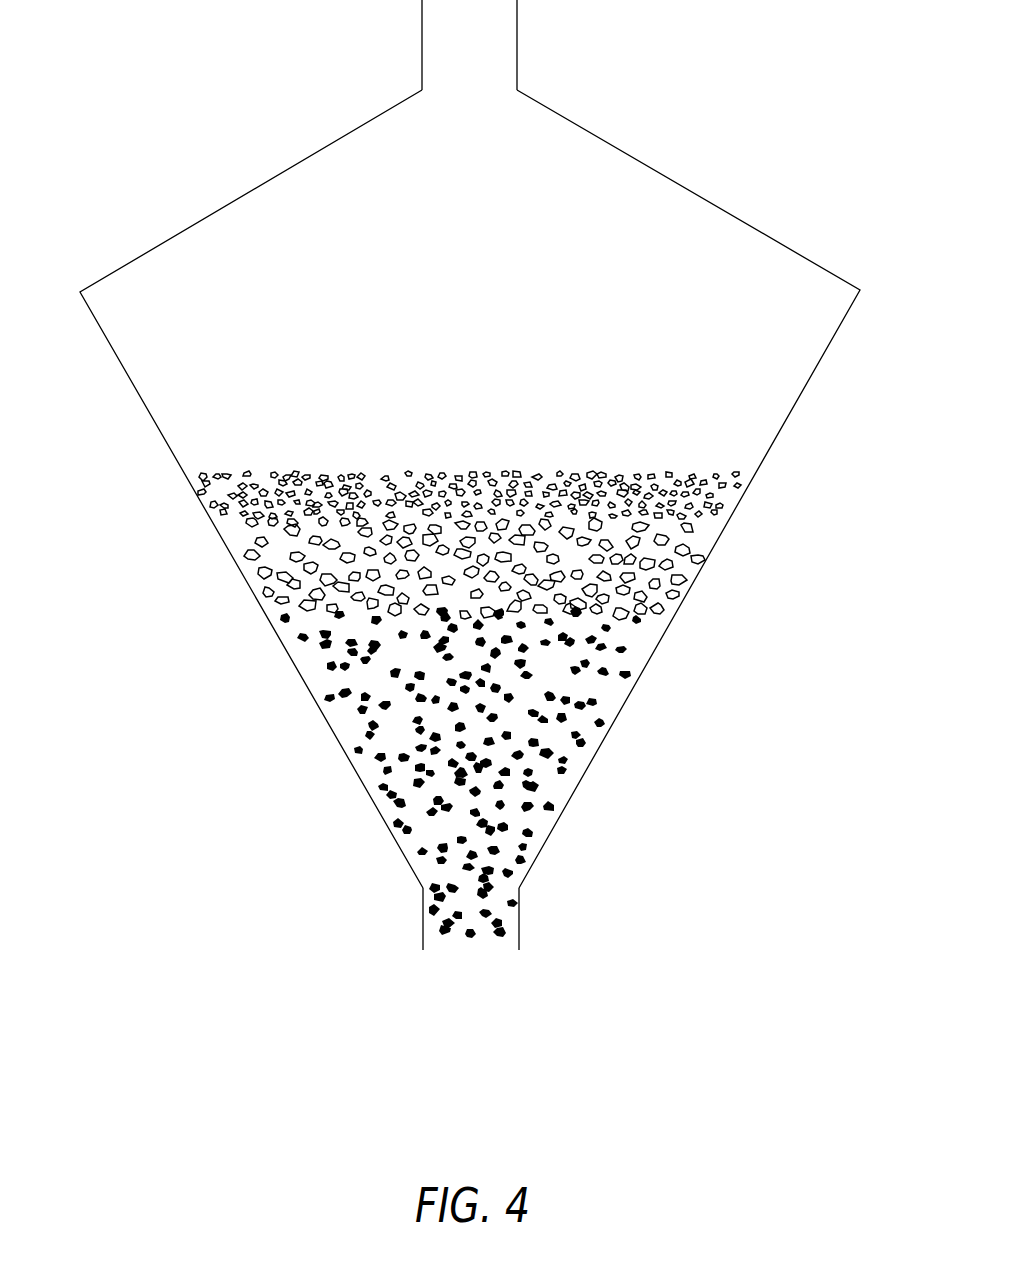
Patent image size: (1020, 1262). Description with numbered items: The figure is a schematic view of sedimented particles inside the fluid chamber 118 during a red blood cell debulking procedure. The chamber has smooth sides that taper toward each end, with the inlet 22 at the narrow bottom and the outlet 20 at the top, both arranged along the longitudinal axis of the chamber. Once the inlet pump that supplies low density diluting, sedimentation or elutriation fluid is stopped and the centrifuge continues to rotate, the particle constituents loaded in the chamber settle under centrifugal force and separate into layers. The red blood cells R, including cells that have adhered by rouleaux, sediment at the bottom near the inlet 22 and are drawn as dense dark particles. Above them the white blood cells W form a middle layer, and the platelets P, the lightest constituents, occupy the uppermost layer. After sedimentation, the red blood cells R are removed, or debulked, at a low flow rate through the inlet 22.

The outlet 20 is at (517, 72).
The fluid chamber 118 is at (682, 188).
The inlet 22 is at (520, 918).
The platelets P is at (723, 473).
The white blood cells W is at (682, 553).
The red blood cells R is at (625, 677).